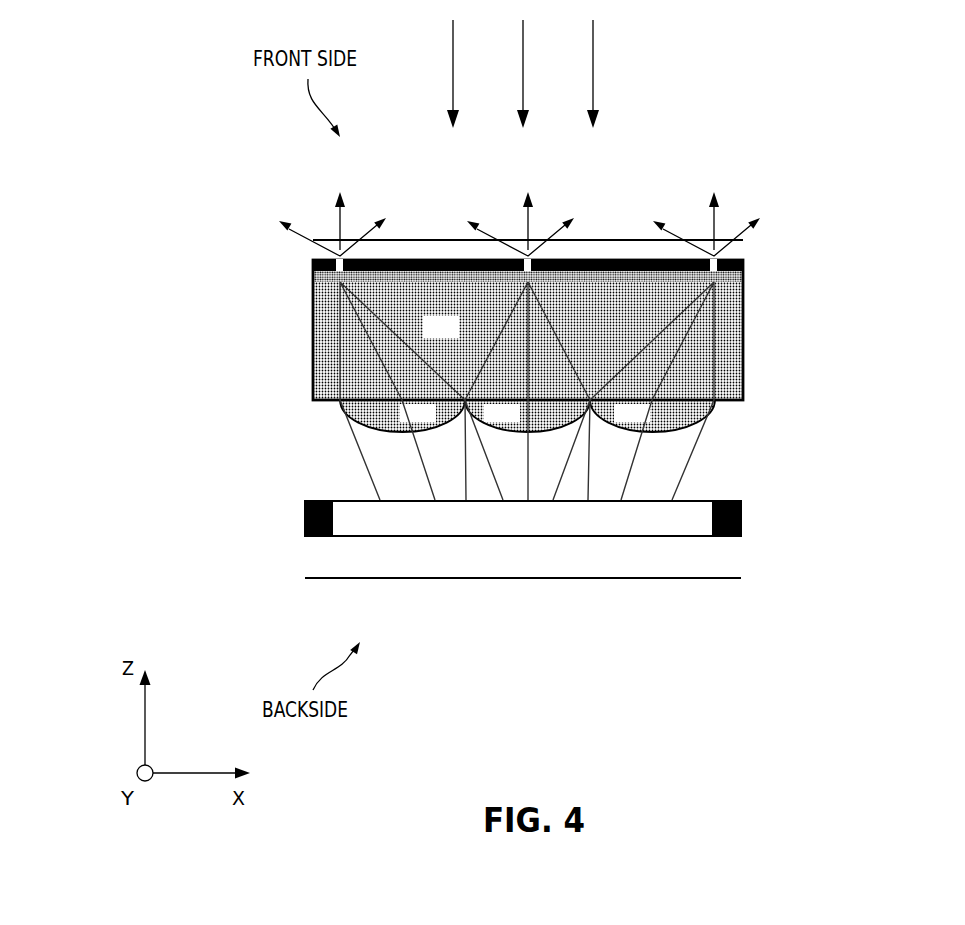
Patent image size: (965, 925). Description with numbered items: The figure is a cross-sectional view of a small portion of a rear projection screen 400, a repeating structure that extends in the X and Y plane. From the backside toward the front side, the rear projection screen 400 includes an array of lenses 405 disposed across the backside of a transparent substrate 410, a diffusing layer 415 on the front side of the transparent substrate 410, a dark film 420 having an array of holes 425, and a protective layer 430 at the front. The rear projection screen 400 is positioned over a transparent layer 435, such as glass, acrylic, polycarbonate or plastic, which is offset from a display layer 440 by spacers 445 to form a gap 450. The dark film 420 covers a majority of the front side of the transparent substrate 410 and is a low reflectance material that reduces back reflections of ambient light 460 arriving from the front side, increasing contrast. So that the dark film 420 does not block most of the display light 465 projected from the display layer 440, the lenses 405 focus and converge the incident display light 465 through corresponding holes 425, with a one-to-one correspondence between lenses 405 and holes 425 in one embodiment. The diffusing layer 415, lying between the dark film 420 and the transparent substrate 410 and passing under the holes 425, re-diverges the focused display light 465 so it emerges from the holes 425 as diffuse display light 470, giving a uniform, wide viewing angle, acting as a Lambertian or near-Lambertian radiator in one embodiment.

The rear projection screen 400 is at (280, 459).
The lenses 405 is at (527, 415).
The transparent substrate 410 is at (454, 336).
The diffusing layer 415 is at (744, 281).
The dark film 420 is at (744, 270).
The holes 425 is at (348, 236).
The protective layer 430 is at (741, 250).
The transparent layer 435 is at (790, 455).
The display layer 440 is at (602, 572).
The spacers 445 is at (305, 521).
The gap 450 is at (565, 529).
The ambient light 460 is at (594, 92).
The display light 465 is at (360, 449).
The diffuse display light 470 is at (337, 227).